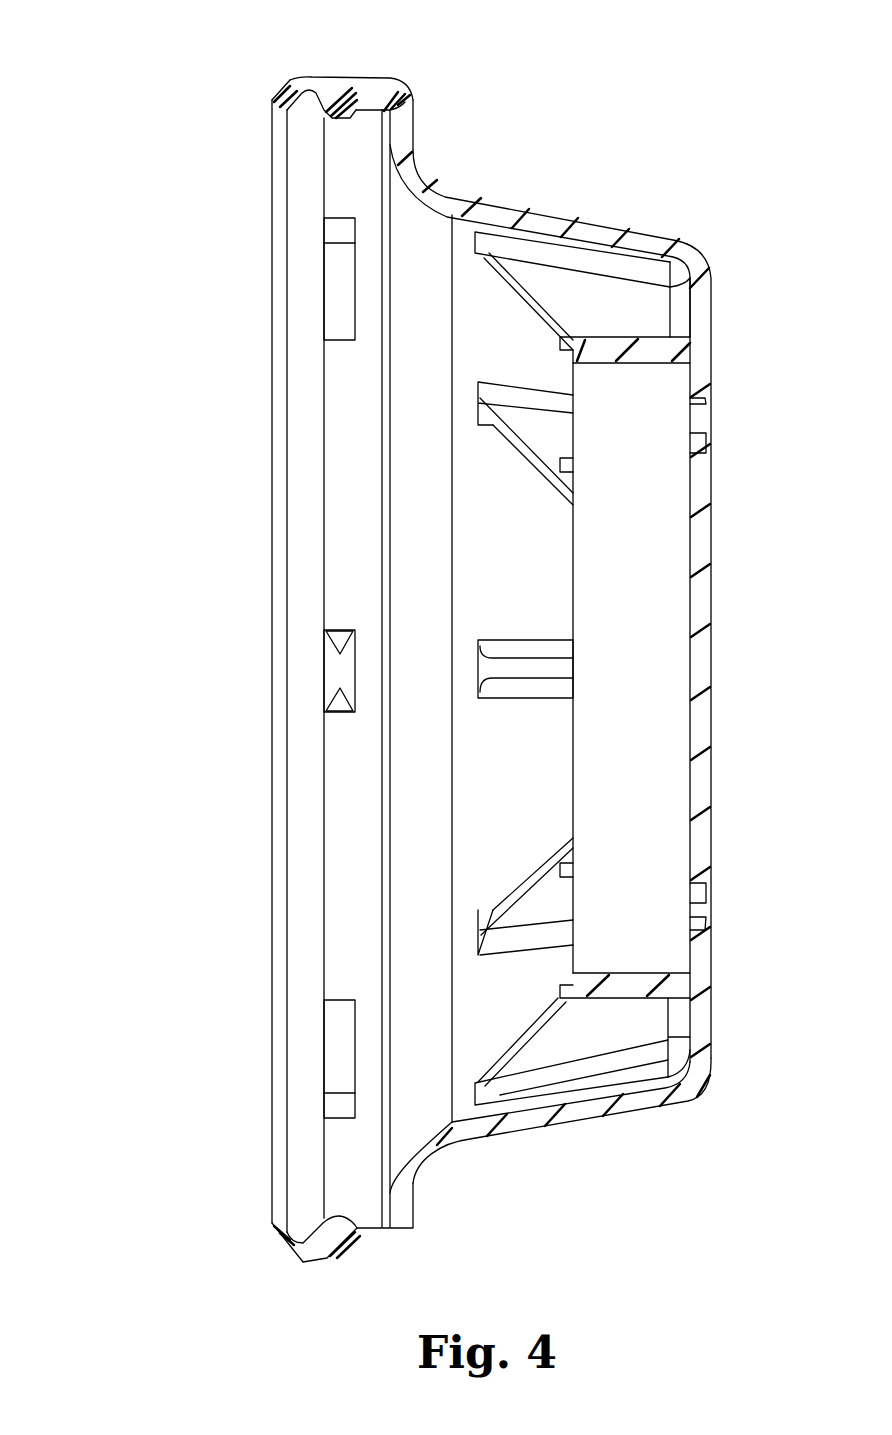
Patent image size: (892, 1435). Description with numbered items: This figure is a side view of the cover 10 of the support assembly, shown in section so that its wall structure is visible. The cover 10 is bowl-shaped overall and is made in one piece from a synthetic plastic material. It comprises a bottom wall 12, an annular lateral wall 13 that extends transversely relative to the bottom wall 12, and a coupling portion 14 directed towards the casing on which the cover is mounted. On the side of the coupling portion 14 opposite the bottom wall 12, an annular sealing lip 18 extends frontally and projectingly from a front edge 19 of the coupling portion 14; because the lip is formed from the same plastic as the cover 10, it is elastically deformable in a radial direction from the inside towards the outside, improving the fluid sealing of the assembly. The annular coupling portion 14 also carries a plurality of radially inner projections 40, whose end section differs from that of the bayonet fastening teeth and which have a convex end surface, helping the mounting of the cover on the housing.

The cover 10 is at (110, 300).
The bottom wall 12 is at (703, 662).
The annular lateral wall 13 is at (578, 1112).
The coupling portion 14 is at (377, 98).
The annular sealing lip 18 is at (285, 100).
The front edge 19 is at (383, 147).
The radially inner projections 40 is at (340, 93).